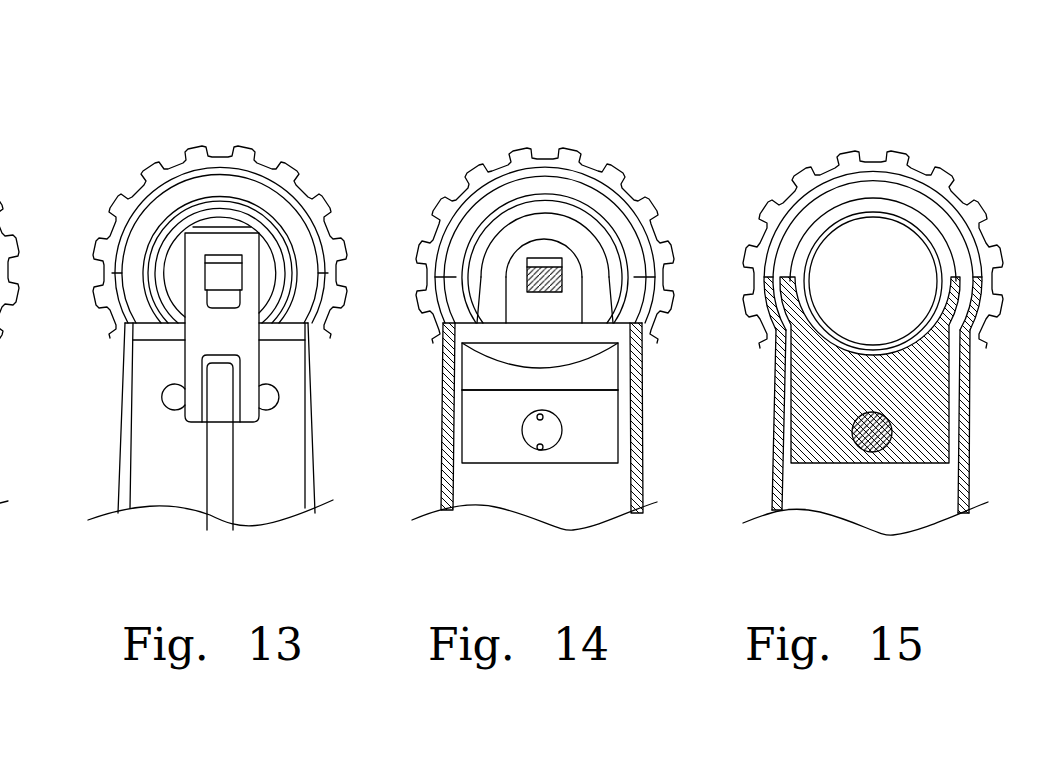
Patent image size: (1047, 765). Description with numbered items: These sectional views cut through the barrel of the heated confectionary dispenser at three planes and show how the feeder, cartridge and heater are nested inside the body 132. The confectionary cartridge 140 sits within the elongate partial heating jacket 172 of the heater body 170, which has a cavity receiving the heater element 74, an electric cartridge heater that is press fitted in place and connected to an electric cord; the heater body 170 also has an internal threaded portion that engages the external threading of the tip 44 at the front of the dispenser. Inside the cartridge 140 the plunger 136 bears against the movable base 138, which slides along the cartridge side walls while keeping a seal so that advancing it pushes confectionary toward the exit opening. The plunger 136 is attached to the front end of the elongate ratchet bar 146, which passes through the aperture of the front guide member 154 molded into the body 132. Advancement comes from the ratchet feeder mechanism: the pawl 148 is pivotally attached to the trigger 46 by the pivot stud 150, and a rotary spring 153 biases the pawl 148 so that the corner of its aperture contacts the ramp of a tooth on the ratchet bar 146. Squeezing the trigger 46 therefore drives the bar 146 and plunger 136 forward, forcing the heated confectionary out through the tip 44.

In FIG. 14, the tip 44 is at (575, 148).
In FIG. 15, the tip 44 is at (843, 172).
In FIG. 13, the trigger 46 is at (203, 480).
In FIG. 14, the heater element 74 is at (553, 432).
In FIG. 15, the heater element 74 is at (862, 455).
In FIG. 13, the body 132 is at (195, 157).
In FIG. 14, the body 132 is at (533, 167).
In FIG. 15, the body 132 is at (902, 168).
In FIG. 13, the plunger 136 is at (207, 218).
In FIG. 14, the plunger 136 is at (498, 248).
In FIG. 14, the movable base 138 is at (577, 203).
In FIG. 15, the movable base 138 is at (843, 245).
In FIG. 13, the confectionary cartridge 140 is at (292, 222).
In FIG. 14, the confectionary cartridge 140 is at (485, 222).
In FIG. 15, the confectionary cartridge 140 is at (852, 213).
In FIG. 13, the elongate ratchet bar 146 is at (222, 273).
In FIG. 14, the elongate ratchet bar 146 is at (540, 292).
In FIG. 13, the pawl 148 is at (192, 268).
In FIG. 13, the pivot stud 150 is at (168, 395).
In FIG. 13, the rotary spring 153 is at (233, 423).
In FIG. 13, the front guide member 154 is at (307, 190).
In FIG. 14, the front guide member 154 is at (503, 291).
In FIG. 14, the heater body 170 is at (517, 190).
In FIG. 15, the heater body 170 is at (928, 207).
In FIG. 14, the elongate partial heating jacket 172 is at (563, 368).